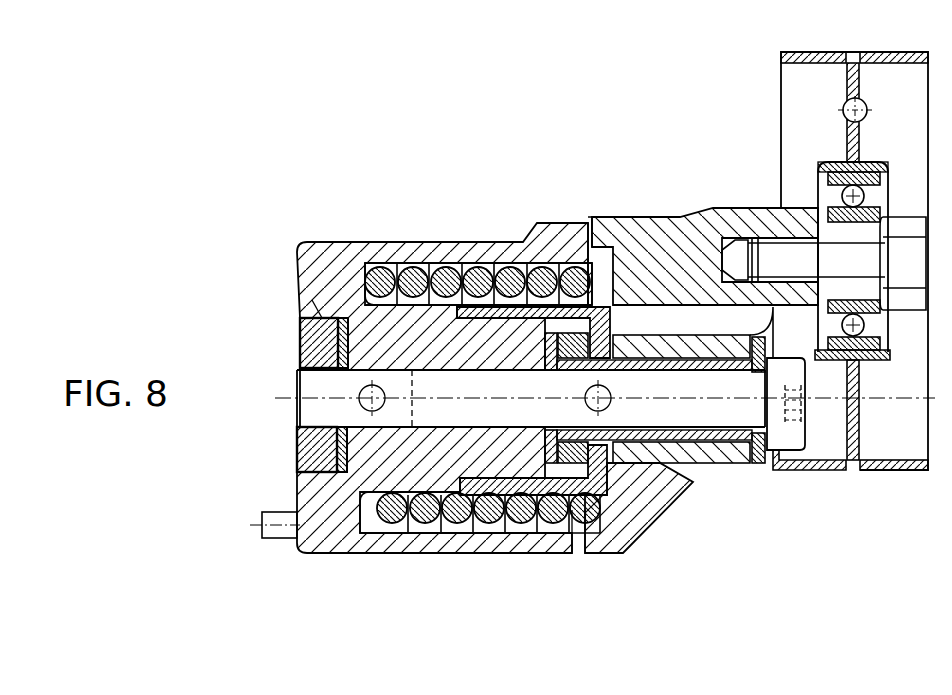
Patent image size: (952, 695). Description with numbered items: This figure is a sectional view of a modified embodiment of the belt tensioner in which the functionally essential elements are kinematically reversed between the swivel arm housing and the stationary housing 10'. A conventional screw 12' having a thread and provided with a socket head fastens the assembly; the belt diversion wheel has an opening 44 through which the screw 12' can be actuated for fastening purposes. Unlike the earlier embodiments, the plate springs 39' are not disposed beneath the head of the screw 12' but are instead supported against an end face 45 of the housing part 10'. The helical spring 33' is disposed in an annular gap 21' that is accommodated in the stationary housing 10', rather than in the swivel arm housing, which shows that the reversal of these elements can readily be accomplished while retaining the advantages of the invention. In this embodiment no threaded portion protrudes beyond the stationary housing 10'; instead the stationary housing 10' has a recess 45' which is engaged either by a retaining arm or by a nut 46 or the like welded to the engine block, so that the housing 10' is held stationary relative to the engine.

The stationary housing 10' is at (471, 423).
The annular gap 21' is at (478, 238).
The helical spring 33' is at (533, 265).
The plate springs 39' is at (651, 306).
The recess 45' is at (280, 378).
The nut 46 is at (320, 348).
The opening 44 is at (860, 398).
The screw 12' is at (780, 437).
The end face 45 is at (533, 536).